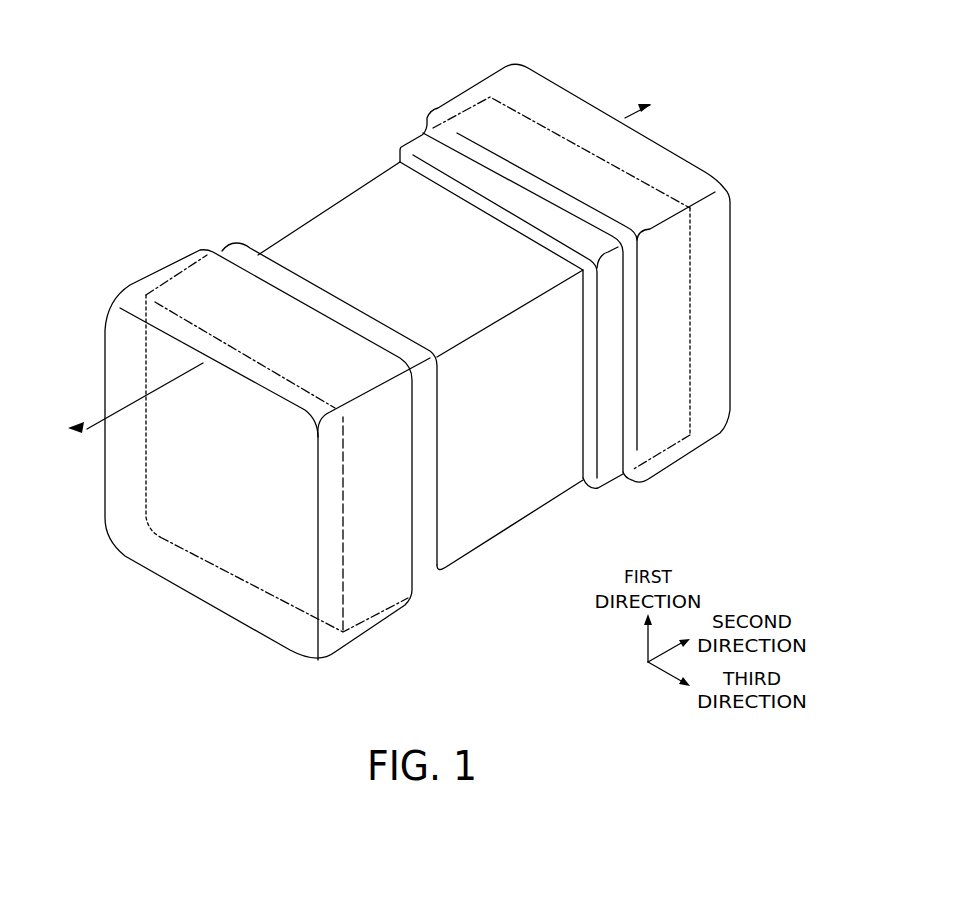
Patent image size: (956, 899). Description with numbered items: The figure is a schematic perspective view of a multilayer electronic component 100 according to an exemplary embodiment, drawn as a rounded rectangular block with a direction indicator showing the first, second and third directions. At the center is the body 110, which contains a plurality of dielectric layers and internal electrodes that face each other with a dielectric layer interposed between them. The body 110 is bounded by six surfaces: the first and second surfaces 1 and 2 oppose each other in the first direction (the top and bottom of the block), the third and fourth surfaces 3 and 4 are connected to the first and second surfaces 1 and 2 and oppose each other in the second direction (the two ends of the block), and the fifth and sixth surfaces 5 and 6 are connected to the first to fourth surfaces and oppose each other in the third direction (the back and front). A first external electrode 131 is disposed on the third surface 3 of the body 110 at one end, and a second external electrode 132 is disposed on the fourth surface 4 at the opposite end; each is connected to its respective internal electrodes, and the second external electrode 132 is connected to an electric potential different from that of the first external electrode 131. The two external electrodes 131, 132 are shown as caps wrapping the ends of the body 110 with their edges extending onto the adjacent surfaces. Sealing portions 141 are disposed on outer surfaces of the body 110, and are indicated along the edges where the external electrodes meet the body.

The multilayer electronic component 100 is at (222, 32).
The body 110 is at (337, 217).
The first external electrode 131 is at (162, 268).
The second external electrode 132 is at (477, 95).
The sealing portion 141 is at (413, 147).
The first surface 1 is at (478, 522).
The second surface 2 is at (383, 200).
The third surface 3 is at (220, 534).
The fourth surface 4 is at (545, 141).
The fifth surface 5 is at (283, 245).
The sixth surface 6 is at (532, 483).